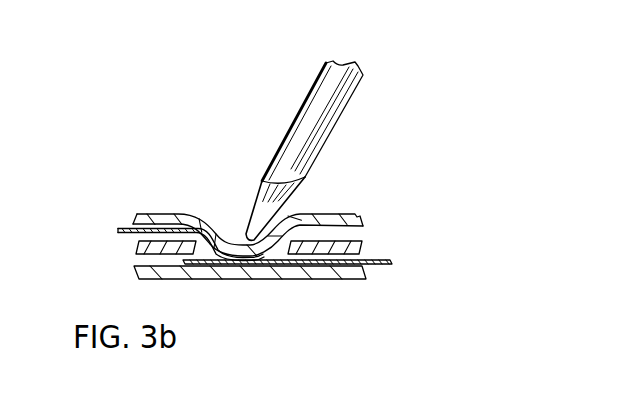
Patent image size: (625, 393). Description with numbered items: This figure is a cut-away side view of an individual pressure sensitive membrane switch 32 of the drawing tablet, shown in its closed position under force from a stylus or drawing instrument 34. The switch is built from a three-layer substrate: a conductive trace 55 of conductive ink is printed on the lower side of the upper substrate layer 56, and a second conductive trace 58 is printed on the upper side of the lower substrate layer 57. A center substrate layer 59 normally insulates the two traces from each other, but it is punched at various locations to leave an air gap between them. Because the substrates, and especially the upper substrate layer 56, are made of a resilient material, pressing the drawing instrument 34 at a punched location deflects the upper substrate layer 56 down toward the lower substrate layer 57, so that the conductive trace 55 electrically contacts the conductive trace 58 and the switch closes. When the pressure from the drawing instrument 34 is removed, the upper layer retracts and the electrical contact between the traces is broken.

The drawing instrument 34 is at (303, 105).
The pressure sensitive membrane switch 32 is at (384, 162).
The upper substrate layer 56 is at (148, 221).
The conductive trace 55 is at (128, 234).
The center substrate layer 59 is at (333, 247).
The conductive trace 58 is at (372, 263).
The lower substrate layer 57 is at (317, 272).